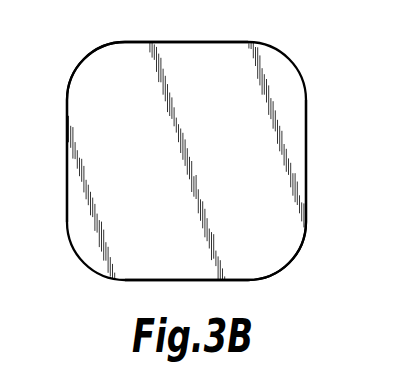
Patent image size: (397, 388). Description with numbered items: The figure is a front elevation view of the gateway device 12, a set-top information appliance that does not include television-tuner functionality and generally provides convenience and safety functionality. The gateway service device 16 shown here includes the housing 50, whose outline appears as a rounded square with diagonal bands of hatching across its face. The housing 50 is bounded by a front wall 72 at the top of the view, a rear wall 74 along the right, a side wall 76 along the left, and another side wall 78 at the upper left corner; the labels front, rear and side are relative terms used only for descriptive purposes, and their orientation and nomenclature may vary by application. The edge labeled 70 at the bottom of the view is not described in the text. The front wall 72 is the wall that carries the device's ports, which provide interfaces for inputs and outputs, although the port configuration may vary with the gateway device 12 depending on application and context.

The gateway device 12 is at (310, 63).
The gateway service device 16 is at (310, 198).
The housing 50 is at (292, 241).
The bottom edge 70 is at (193, 281).
The front wall 72 is at (192, 42).
The rear wall 74 is at (307, 158).
The side wall 76 is at (67, 189).
The side wall 78 is at (85, 106).